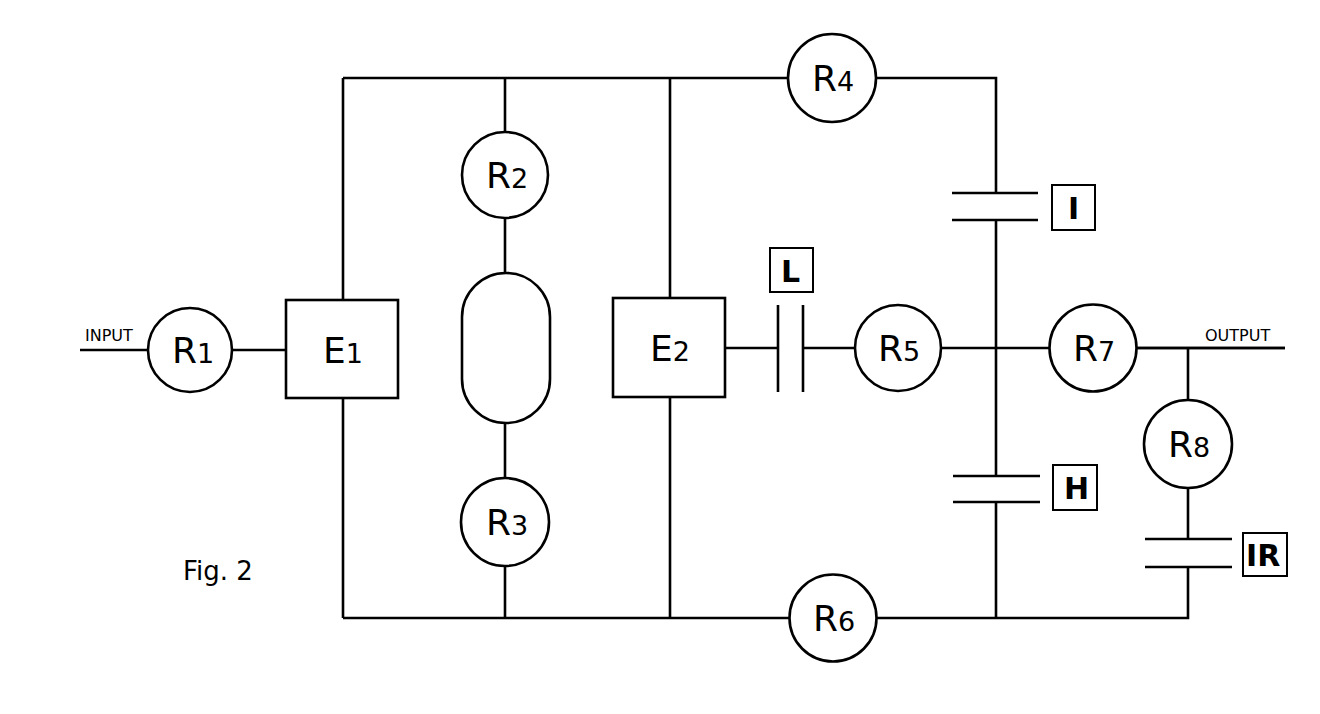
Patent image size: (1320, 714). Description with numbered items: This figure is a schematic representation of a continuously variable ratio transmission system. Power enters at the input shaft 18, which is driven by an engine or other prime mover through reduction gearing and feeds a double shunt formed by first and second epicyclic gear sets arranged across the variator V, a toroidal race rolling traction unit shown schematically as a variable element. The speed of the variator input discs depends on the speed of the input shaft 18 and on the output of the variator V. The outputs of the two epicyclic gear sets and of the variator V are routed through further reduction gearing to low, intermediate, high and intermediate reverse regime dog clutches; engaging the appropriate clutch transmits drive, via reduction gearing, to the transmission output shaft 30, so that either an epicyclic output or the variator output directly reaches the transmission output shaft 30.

The input shaft 18 is at (120, 351).
The transmission output shaft 30 is at (1248, 349).
The variator V is at (548, 408).